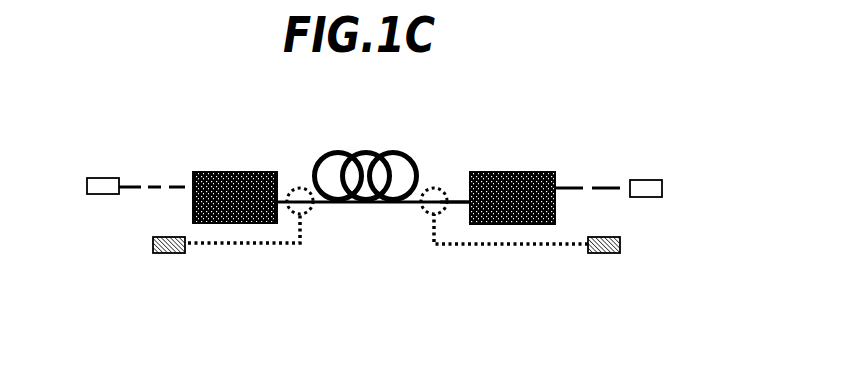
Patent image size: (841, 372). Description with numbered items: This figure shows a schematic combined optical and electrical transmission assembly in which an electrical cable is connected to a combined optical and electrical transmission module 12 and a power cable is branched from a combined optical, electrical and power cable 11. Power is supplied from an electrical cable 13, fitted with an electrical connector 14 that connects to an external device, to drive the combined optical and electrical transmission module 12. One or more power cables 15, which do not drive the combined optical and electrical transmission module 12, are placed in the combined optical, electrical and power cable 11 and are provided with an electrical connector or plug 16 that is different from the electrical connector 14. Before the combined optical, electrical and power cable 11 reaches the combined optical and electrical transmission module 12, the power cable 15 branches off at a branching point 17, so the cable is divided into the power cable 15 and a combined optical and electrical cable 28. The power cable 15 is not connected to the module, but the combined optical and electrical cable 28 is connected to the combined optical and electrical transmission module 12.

The combined optical, electrical and power cable 11 is at (348, 152).
The combined optical and electrical transmission module 12 is at (223, 171).
The electrical cable 13 is at (145, 195).
The electrical connector 14 is at (107, 180).
The power cable 15 is at (265, 247).
The electrical connector (or plug) 16 is at (175, 253).
The branching point 17 is at (307, 212).
The combined optical and electrical cable 28 is at (450, 200).